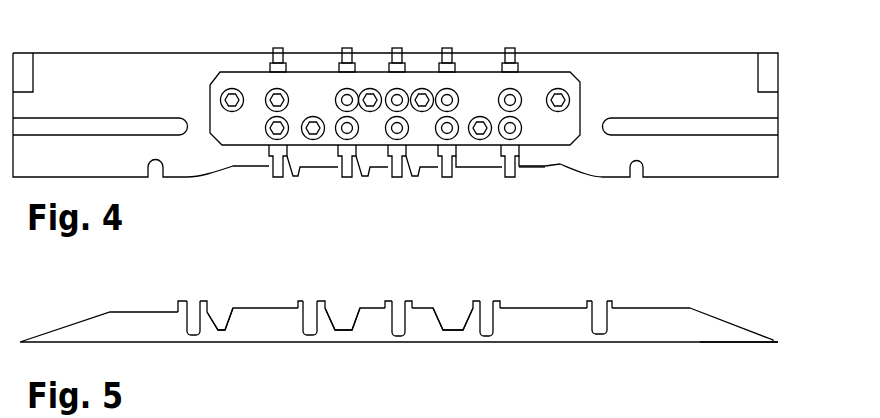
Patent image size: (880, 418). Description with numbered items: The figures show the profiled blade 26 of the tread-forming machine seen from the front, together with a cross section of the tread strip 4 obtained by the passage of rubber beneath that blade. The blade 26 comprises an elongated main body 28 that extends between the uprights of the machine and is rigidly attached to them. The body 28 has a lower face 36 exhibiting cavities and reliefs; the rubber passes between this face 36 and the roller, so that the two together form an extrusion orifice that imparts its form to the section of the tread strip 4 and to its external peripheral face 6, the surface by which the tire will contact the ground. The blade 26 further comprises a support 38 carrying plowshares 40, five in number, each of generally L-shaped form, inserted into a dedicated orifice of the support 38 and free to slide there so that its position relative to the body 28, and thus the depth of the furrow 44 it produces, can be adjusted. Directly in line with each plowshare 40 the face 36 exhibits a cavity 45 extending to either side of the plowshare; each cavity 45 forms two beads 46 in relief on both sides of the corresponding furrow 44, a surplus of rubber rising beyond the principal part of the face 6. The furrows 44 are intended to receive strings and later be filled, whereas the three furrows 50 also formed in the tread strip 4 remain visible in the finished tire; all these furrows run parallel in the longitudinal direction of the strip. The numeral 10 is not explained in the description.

In FIG. 5, the tread strip 4 is at (759, 303).
In FIG. 5, the external peripheral face 6 is at (666, 302).
In FIG. 5, the assembly 10 is at (739, 380).
In FIG. 4, the profiled blade 26 is at (794, 75).
In FIG. 4, the main body 28 is at (695, 88).
In FIG. 4, the lower face 36 is at (540, 174).
In FIG. 4, the support 38 is at (538, 95).
In FIG. 4, the plowshare 40 is at (343, 172).
In FIG. 5, the furrow 44 is at (192, 294).
In FIG. 4, the cavity 45 is at (267, 188).
In FIG. 5, the bead 46 is at (586, 292).
In FIG. 5, the furrow 50 is at (222, 316).